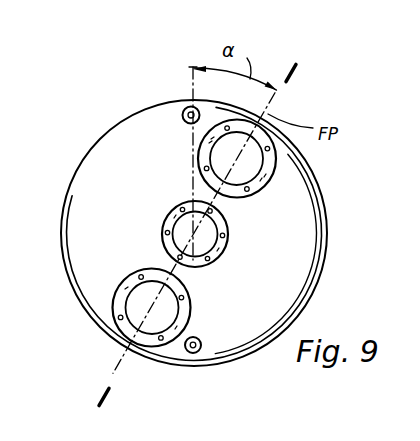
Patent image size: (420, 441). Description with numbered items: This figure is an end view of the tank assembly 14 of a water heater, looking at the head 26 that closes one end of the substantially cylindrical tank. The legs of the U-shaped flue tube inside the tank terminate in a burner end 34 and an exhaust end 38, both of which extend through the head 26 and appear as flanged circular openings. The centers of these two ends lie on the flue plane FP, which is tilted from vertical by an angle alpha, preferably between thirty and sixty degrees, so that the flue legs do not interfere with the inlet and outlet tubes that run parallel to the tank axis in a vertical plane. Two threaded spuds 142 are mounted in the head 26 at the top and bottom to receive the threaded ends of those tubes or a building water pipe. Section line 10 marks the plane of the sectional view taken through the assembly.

The cabinet 10 is at (310, 83).
The tank assembly 14 is at (98, 138).
The head 26 is at (300, 249).
The burner end 34 is at (123, 327).
The exhaust end 38 is at (270, 175).
The threaded spud 142 is at (182, 109).